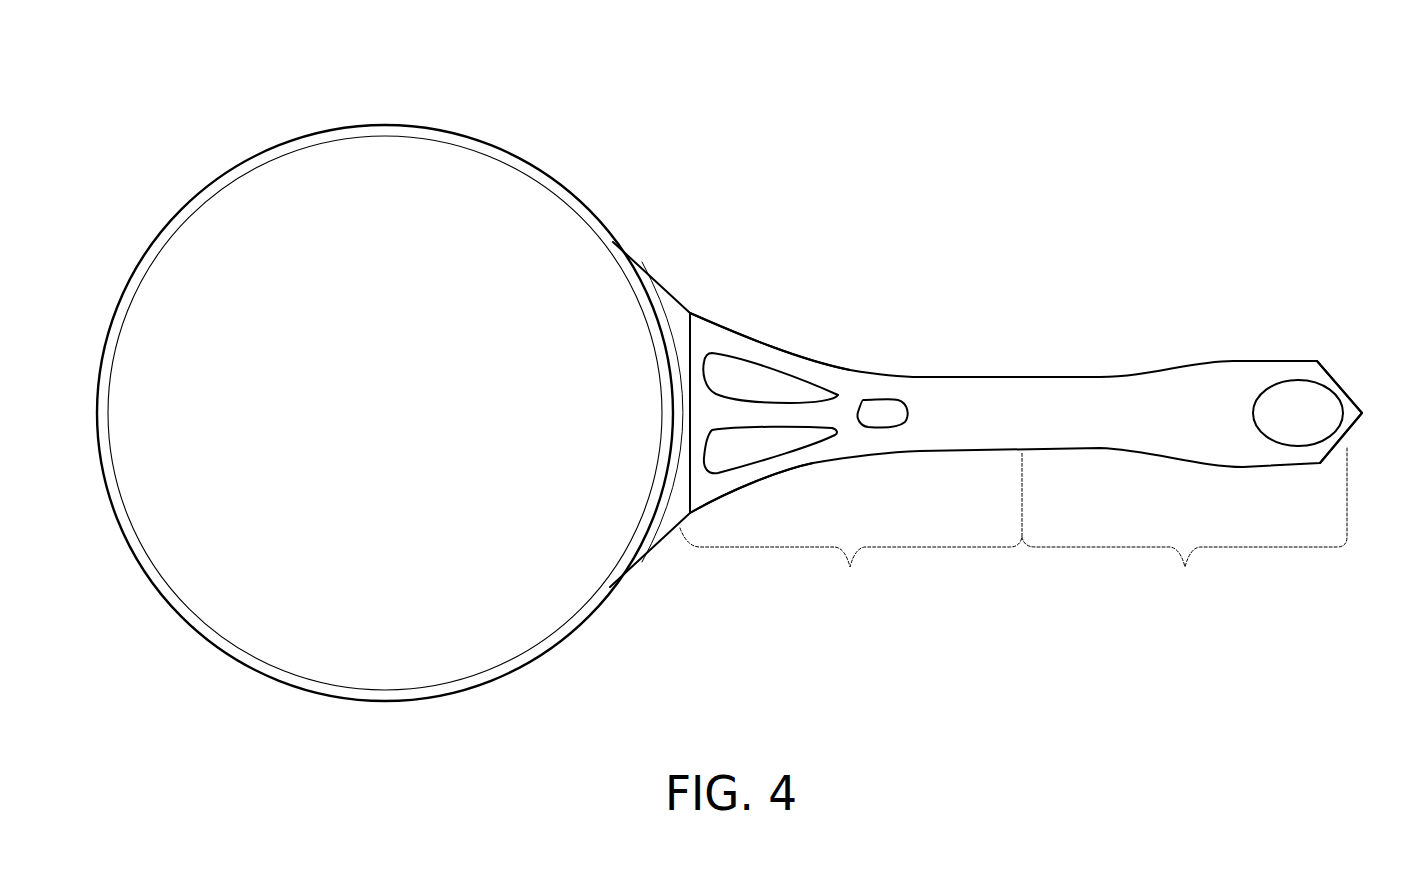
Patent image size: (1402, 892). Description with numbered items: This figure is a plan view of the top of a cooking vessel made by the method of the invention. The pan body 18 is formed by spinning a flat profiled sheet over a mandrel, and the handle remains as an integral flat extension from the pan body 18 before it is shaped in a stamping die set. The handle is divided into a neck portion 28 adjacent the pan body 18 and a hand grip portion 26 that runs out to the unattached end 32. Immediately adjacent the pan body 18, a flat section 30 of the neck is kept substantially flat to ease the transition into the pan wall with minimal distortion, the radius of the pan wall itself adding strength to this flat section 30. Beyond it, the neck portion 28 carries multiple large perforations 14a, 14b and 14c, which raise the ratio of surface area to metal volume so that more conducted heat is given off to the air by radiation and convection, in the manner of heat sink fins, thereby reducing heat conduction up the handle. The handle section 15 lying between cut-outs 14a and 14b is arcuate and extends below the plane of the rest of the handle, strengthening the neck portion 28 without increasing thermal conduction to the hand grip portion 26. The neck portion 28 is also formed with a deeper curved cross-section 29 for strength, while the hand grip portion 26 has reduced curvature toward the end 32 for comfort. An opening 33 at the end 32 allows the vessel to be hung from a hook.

The pan body 18 is at (498, 212).
The flat section of the neck portion 30 is at (698, 330).
The deeper curved cross-section 29 is at (990, 376).
The handle section 15 is at (770, 413).
The perforation 14a is at (745, 378).
The perforation 14b is at (745, 445).
The perforation 14c is at (878, 413).
The opening 33 is at (1292, 407).
The unattached end 32 is at (1347, 380).
The neck portion 28 is at (851, 528).
The hand grip portion 26 is at (1184, 524).